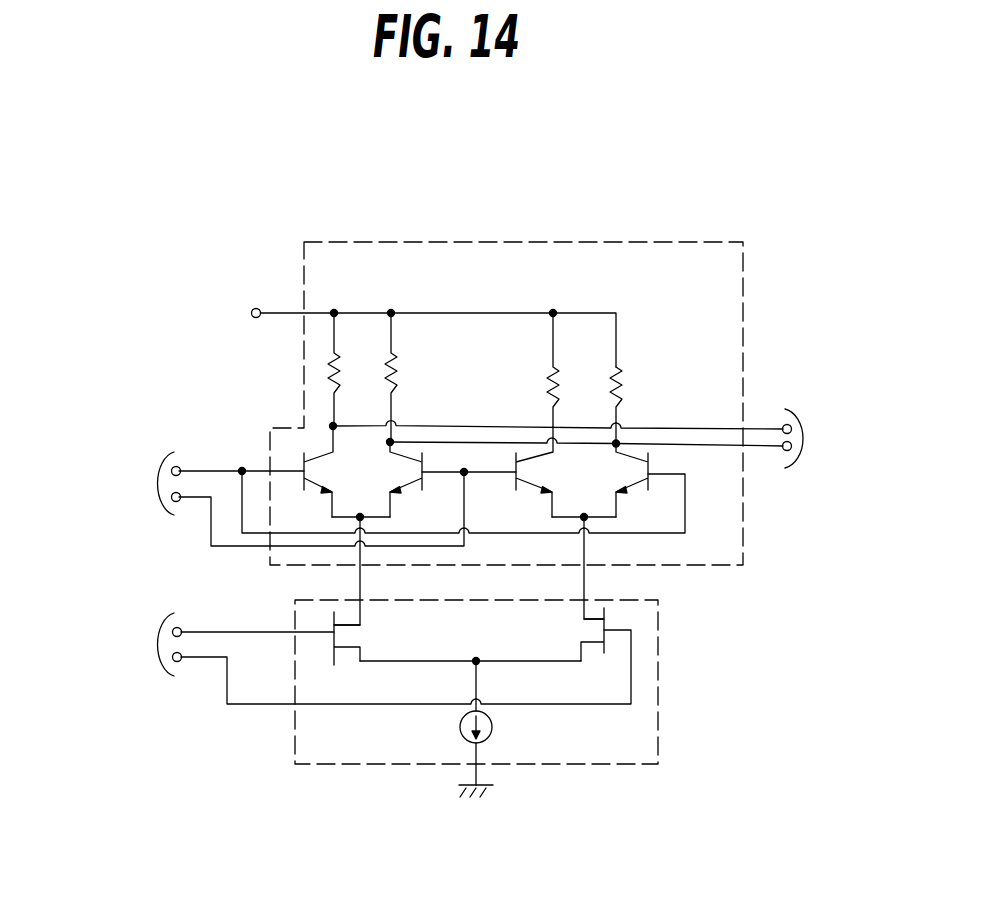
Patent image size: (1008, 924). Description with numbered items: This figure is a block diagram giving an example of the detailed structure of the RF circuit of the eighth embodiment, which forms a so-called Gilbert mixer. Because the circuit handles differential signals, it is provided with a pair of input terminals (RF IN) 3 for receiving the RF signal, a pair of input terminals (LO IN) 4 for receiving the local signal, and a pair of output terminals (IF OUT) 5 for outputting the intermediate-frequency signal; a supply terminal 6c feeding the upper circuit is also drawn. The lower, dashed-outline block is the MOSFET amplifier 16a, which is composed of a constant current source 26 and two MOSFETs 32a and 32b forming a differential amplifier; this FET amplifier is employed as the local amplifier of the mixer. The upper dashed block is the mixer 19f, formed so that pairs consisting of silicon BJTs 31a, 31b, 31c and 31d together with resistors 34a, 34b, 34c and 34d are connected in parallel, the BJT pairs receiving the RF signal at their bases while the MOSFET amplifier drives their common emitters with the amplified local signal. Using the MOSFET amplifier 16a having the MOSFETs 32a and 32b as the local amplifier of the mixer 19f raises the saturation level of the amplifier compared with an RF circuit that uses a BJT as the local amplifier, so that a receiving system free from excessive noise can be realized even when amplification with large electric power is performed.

The input terminals (RF IN) 3 is at (163, 452).
The input terminals (LO IN) 4 is at (162, 615).
The output terminals (IF OUT) 5 is at (795, 410).
The power supply terminal Vcc 6c is at (253, 310).
The MOSFET amplifier 16a is at (658, 742).
The mixer 19f is at (743, 268).
The constant current source 26 is at (492, 735).
The transistor 31a is at (318, 452).
The transistor 31b is at (410, 484).
The silicon BJT 31c is at (535, 485).
The silicon BJT 31d is at (640, 490).
The MOSFET 32a is at (353, 638).
The MOSFET 32b is at (608, 622).
The resistor 34a is at (328, 380).
The resistor 34b is at (403, 382).
The resistor 34c is at (547, 392).
The resistor 34d is at (618, 397).